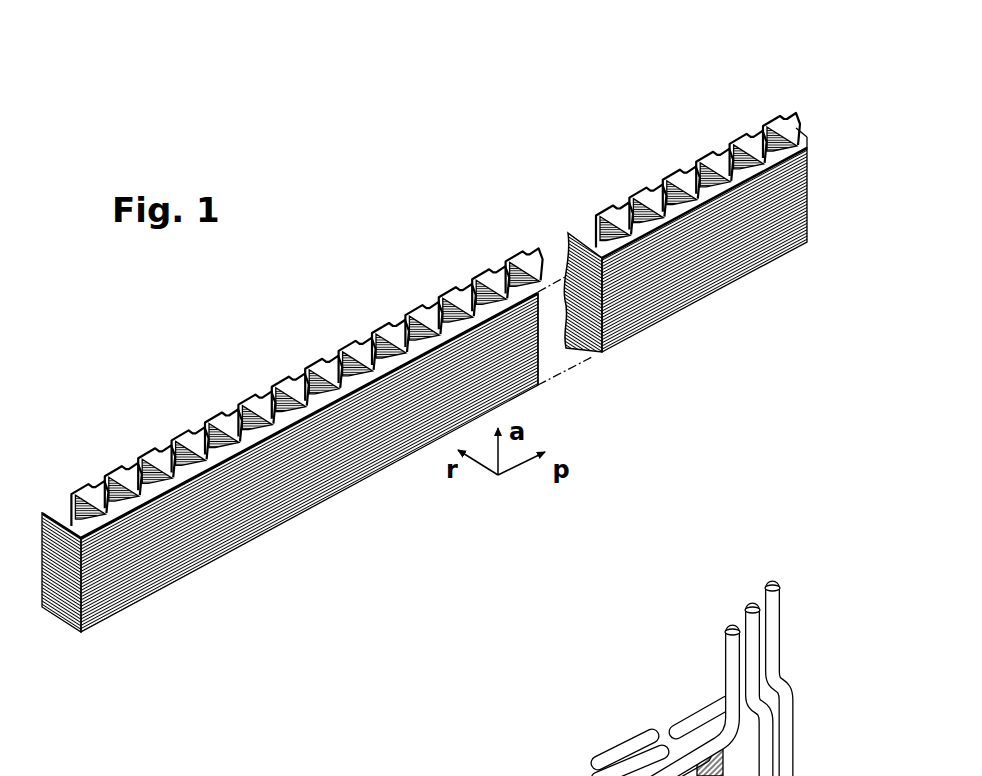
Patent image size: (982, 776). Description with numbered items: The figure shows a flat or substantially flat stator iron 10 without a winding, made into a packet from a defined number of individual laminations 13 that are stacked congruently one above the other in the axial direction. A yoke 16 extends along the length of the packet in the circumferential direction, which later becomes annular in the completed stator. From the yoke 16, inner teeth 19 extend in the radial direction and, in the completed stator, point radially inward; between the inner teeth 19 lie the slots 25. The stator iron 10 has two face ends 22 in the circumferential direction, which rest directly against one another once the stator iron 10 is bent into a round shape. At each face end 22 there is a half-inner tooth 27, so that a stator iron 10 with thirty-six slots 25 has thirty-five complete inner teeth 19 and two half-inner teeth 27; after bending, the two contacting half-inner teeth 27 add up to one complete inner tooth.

The stator iron 10 is at (429, 378).
The individual laminations 13 is at (608, 217).
The yoke 16 is at (250, 447).
The inner teeth 19 is at (293, 393).
The face ends 22 is at (47, 632).
The slots 25 is at (654, 188).
The half-inner tooth 27 is at (62, 517).